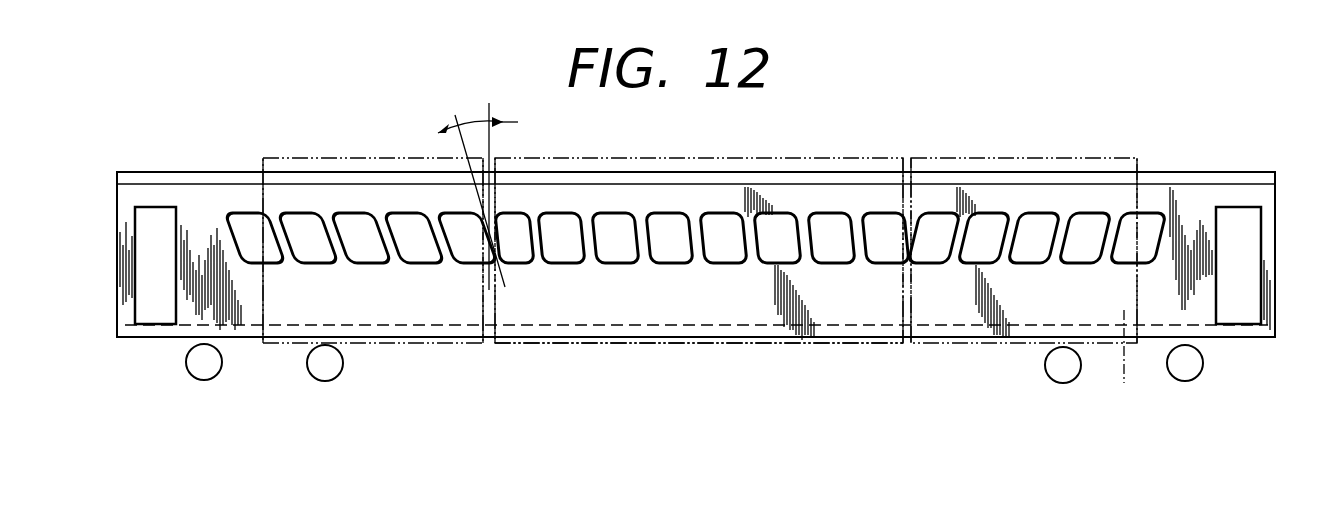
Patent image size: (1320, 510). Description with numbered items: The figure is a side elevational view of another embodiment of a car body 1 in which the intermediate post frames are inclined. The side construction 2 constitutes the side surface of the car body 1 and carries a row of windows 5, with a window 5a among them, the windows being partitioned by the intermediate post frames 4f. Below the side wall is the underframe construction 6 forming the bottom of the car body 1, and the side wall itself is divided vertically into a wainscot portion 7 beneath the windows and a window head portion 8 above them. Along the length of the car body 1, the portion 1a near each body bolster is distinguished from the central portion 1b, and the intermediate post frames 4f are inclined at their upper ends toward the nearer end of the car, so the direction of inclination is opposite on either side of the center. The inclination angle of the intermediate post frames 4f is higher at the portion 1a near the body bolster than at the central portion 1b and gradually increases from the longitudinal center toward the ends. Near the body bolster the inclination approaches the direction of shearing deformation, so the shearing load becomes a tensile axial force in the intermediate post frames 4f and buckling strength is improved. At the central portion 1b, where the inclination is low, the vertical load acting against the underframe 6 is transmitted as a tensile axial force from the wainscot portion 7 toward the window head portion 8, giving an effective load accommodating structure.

The car body 1 is at (170, 168).
The part near the body bolster 1a is at (427, 158).
The central portion 1b is at (873, 158).
The side construction 2 is at (213, 203).
The intermediate post frames 4f is at (295, 222).
The windows 5 is at (398, 222).
The window frame 5a is at (347, 222).
The underframe construction 6 is at (587, 338).
The wainscot portion 7 is at (672, 298).
The window head portion 8 is at (662, 198).